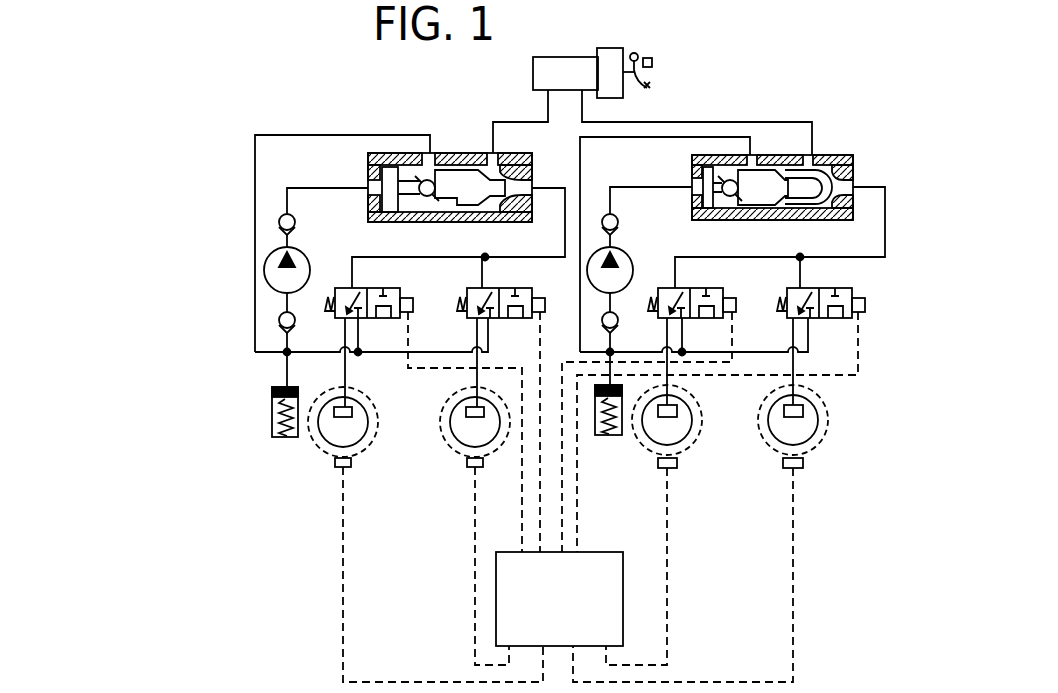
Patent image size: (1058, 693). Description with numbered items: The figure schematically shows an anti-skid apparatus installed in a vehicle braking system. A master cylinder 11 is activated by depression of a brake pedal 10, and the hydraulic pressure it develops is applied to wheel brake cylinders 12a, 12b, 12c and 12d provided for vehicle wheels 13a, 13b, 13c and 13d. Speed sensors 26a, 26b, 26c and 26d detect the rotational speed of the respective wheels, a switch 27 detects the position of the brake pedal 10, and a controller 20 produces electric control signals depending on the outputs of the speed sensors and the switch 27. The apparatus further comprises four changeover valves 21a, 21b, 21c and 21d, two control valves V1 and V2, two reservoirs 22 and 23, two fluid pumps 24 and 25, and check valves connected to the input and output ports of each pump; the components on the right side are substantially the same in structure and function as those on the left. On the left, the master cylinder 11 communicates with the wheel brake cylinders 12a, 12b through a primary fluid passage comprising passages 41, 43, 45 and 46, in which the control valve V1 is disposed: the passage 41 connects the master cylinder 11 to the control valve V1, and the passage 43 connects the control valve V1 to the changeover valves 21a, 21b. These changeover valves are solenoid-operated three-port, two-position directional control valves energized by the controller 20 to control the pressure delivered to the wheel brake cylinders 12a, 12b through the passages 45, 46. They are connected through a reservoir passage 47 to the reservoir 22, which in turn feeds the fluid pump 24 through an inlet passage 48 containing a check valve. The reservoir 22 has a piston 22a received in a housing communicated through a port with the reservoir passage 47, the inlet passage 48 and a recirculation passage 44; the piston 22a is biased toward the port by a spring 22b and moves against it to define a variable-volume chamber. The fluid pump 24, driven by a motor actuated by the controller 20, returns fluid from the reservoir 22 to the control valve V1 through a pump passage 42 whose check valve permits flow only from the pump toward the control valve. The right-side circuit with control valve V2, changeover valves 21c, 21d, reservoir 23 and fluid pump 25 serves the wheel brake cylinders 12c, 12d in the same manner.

The brake pedal 10 is at (652, 86).
The master cylinder 11 is at (533, 71).
The switch 27 is at (652, 58).
The passage 41 is at (490, 126).
The pump passage 42 is at (331, 187).
The passage 43 is at (565, 236).
The recirculation passage 44 is at (425, 134).
The passage 45 is at (350, 371).
The passage 46 is at (482, 363).
The reservoir passage 47 is at (297, 357).
The inlet passage 48 is at (293, 330).
The fluid pump 24 is at (303, 253).
The fluid pump 25 is at (626, 250).
The reservoir 22 is at (262, 429).
The piston 22a is at (274, 391).
The spring 22b is at (283, 438).
The reservoir 23 is at (598, 437).
The changeover valve 21a is at (360, 290).
The changeover valve 21b is at (490, 290).
The changeover valve 21c is at (682, 290).
The changeover valve 21d is at (815, 290).
The wheel brake cylinder 12a is at (355, 413).
The wheel brake cylinder 12b is at (466, 411).
The wheel brake cylinder 12c is at (679, 411).
The wheel brake cylinder 12d is at (785, 411).
The vehicle wheel 13a is at (322, 446).
The vehicle wheel 13b is at (452, 446).
The vehicle wheel 13c is at (645, 447).
The vehicle wheel 13d is at (770, 440).
The speed sensor 26a is at (352, 464).
The speed sensor 26b is at (468, 465).
The speed sensor 26c is at (678, 464).
The speed sensor 26d is at (803, 463).
The controller 20 is at (605, 558).
The control valve V1 is at (523, 150).
The control valve V2 is at (840, 151).